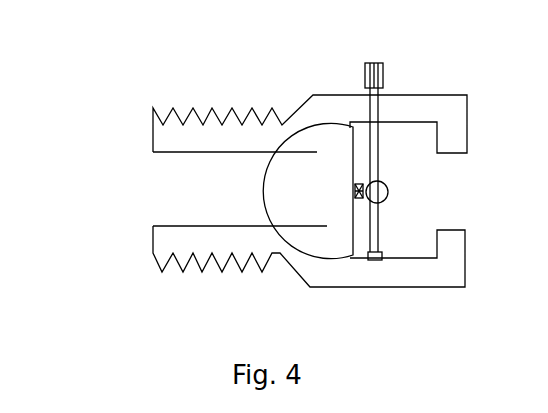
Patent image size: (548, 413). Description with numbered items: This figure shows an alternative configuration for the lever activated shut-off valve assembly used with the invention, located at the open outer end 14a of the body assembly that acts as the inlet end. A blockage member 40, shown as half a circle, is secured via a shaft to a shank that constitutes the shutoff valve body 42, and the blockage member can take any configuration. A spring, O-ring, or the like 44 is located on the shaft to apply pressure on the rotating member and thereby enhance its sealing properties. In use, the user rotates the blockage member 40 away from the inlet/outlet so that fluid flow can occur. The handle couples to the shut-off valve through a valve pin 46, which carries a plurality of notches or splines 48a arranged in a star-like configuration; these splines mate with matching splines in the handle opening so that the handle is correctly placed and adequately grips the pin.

The outer end 14a is at (157, 203).
The blockage member 40 is at (328, 222).
The shutoff valve body 42 is at (388, 170).
The spring or O-ring 44 is at (358, 182).
The valve pin 46 is at (367, 63).
The splines 48a is at (385, 72).